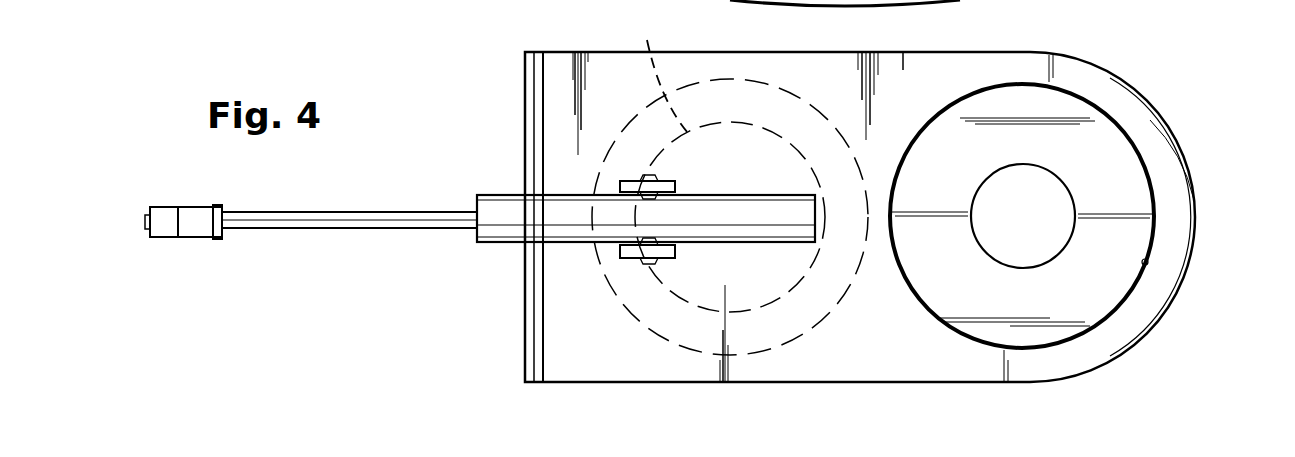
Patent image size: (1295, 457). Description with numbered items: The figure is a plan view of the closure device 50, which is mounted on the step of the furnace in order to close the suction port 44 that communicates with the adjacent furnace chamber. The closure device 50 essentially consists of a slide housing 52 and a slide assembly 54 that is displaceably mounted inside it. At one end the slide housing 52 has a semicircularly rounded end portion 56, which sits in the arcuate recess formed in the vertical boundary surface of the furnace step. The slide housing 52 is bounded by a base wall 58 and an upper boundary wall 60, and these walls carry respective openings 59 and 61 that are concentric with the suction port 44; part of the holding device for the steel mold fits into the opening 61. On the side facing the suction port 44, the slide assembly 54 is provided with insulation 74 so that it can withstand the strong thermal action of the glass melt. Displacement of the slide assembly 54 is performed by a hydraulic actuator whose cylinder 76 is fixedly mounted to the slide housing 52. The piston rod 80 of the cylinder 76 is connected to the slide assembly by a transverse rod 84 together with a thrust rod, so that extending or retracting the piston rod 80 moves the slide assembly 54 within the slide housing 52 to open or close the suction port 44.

The suction port 44 is at (1023, 0).
The closure device 50 is at (523, 165).
The slide housing 52 is at (695, 62).
The slide assembly 54 is at (742, 80).
The semicircularly rounded end portion 56 is at (1189, 156).
The base wall 58 is at (1080, 110).
The opening 59 is at (1073, 198).
The upper boundary wall 60 is at (903, 70).
The opening 61 is at (1148, 262).
The insulation 74 is at (659, 70).
The cylinder 76 is at (503, 232).
The piston rod 80 is at (340, 218).
The transverse rod 84 is at (168, 216).